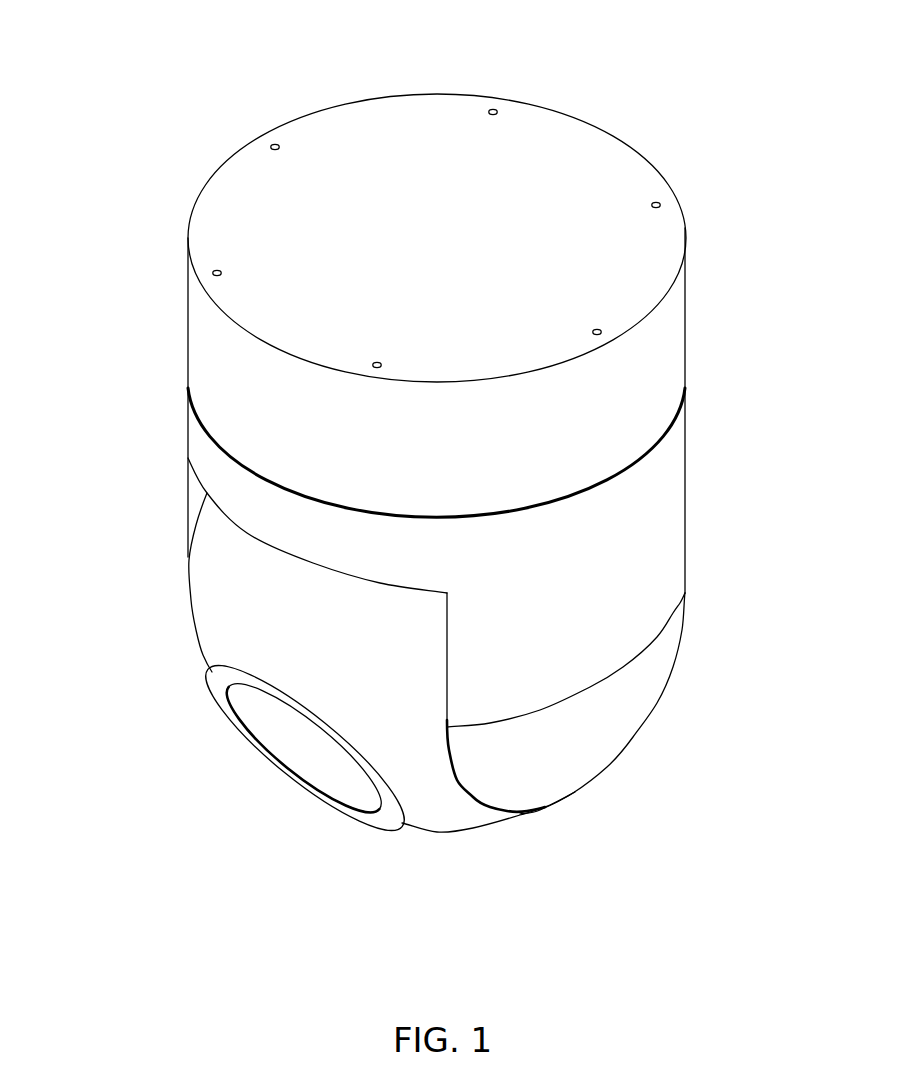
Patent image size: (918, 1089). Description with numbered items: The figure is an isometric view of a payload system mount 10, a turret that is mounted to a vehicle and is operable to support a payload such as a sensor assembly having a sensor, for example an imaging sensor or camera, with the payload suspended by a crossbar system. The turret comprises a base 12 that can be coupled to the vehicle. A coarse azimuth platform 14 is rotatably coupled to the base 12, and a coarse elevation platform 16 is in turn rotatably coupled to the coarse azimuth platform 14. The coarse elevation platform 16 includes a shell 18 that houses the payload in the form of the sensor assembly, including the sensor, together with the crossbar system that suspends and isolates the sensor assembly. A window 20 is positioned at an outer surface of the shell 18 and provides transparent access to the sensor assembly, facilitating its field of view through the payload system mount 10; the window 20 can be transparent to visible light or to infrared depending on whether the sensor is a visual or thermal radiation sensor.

The payload system mount 10 is at (688, 103).
The base 12 is at (323, 229).
The coarse azimuth platform 14 is at (628, 577).
The coarse elevation platform 16 is at (292, 635).
The shell 18 is at (207, 650).
The window 20 is at (313, 756).